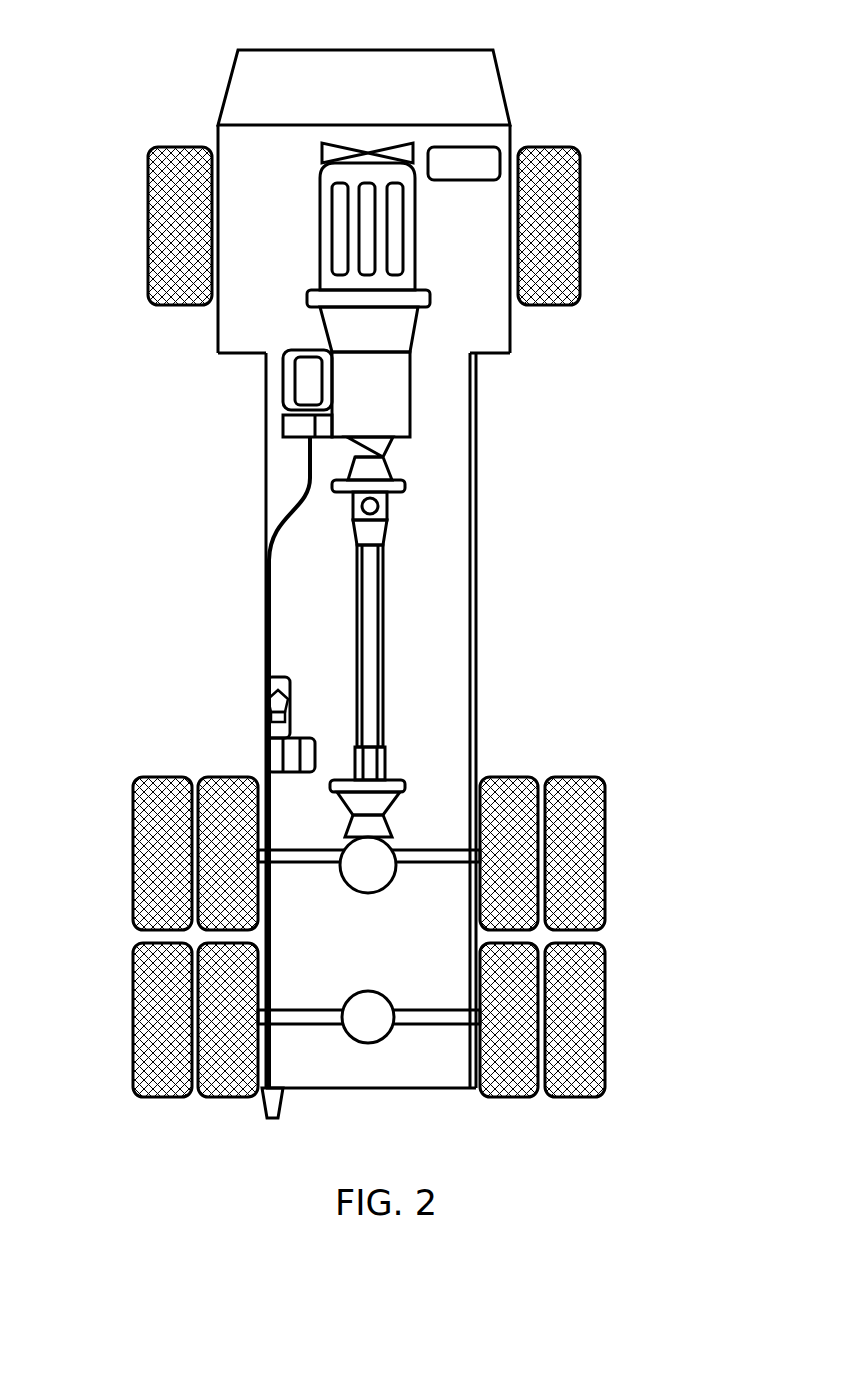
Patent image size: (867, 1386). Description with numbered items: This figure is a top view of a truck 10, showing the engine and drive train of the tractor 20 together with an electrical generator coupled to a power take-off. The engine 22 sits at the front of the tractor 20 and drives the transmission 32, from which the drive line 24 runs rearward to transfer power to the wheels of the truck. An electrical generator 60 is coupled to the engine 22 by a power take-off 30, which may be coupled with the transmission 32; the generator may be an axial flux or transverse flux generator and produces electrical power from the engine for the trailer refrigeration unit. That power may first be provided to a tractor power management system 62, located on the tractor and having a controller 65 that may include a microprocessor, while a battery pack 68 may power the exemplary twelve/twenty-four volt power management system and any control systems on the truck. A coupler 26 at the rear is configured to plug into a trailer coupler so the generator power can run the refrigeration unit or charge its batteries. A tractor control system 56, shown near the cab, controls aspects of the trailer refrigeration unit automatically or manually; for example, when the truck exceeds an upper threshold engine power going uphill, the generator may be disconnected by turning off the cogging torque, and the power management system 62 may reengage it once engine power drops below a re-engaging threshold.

The vehicle 10 is at (150, 84).
The tractor 20 is at (452, 90).
The engine 22 is at (413, 270).
The drive line 24 is at (370, 600).
The coupler 26 is at (268, 1113).
The power take-off 30 is at (305, 427).
The transmission 32 is at (372, 397).
The tractor control system 56 is at (465, 160).
The electrical generator 60 is at (308, 390).
The tractor power management system 62 is at (275, 690).
The controller 65 is at (268, 708).
The battery pack 68 is at (277, 755).